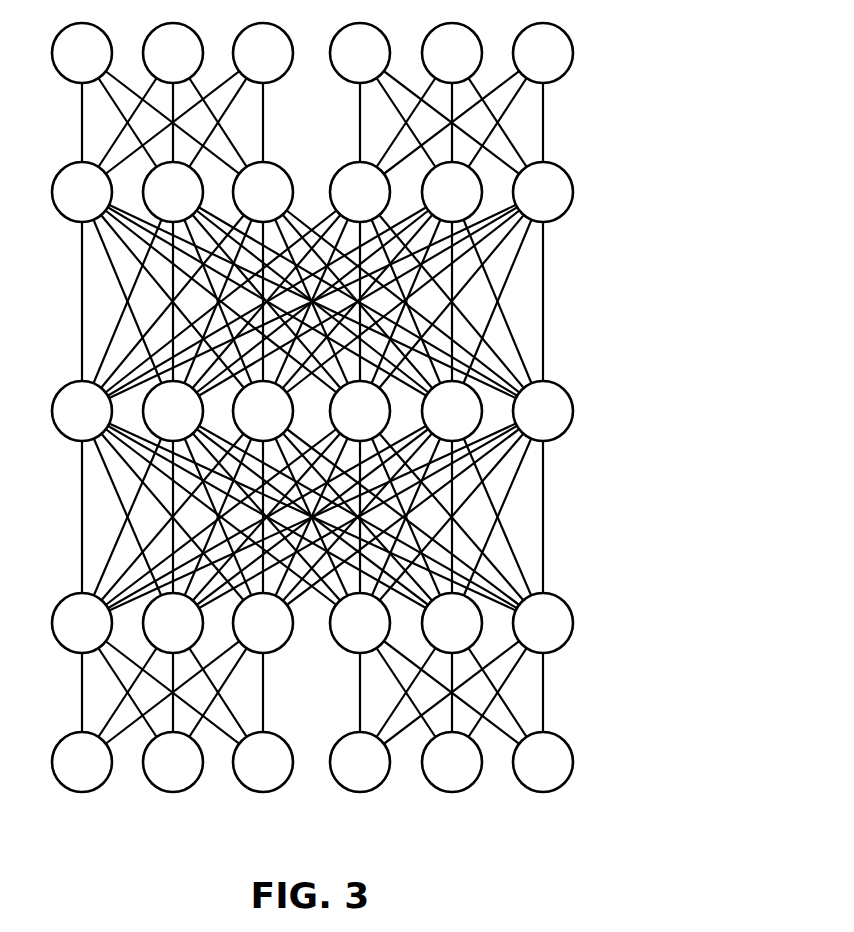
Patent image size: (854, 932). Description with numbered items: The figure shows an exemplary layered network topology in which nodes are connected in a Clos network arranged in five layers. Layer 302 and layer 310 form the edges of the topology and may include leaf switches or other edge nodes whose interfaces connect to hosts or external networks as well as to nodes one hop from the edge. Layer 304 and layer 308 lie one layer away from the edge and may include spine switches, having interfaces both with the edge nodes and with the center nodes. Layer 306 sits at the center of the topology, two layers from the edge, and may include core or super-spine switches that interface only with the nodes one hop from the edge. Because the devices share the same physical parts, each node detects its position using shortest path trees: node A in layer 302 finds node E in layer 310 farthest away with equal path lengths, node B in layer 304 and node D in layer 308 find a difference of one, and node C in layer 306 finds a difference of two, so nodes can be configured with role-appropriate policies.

The layer 302 is at (600, 790).
The layer 304 is at (600, 651).
The layer 306 is at (600, 439).
The layer 308 is at (600, 220).
The layer 310 is at (600, 81).